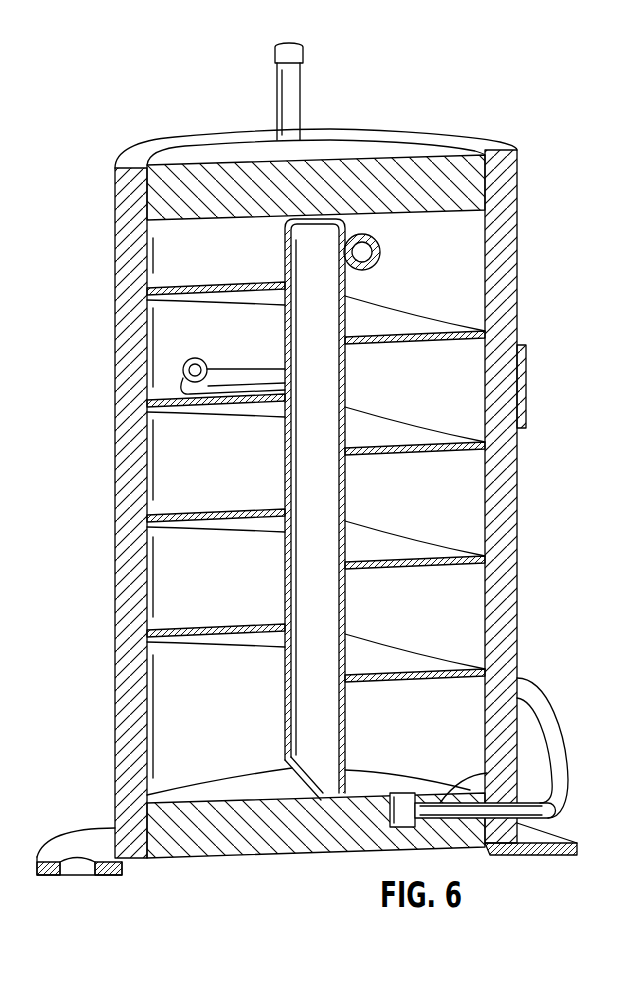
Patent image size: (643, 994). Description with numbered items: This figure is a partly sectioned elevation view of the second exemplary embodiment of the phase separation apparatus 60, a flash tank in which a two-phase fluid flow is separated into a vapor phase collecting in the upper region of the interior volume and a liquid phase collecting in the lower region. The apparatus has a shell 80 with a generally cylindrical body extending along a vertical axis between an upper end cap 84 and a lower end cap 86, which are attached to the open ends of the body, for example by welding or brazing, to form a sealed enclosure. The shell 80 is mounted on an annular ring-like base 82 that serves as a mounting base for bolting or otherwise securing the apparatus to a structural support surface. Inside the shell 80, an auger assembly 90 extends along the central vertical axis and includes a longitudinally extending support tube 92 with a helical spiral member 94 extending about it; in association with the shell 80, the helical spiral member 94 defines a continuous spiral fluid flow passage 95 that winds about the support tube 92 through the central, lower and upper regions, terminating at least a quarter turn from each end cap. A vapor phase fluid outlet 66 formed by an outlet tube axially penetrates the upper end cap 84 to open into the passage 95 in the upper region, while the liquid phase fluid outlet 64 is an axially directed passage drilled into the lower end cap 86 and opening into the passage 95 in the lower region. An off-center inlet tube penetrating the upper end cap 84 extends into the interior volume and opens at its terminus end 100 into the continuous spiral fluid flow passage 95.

The phase separation apparatus 60 is at (322, 475).
The liquid phase fluid outlet 64 is at (526, 770).
The vapor phase fluid outlet 66 is at (302, 93).
The shell 80 is at (115, 326).
The base 82 is at (546, 834).
The upper end cap 84 is at (382, 157).
The lower end cap 86 is at (320, 854).
The auger assembly 90 is at (415, 280).
The support tube 92 is at (345, 362).
The helical spiral member 94 is at (425, 300).
The continuous spiral fluid flow passage 95 is at (214, 590).
The terminus end 100 is at (203, 360).